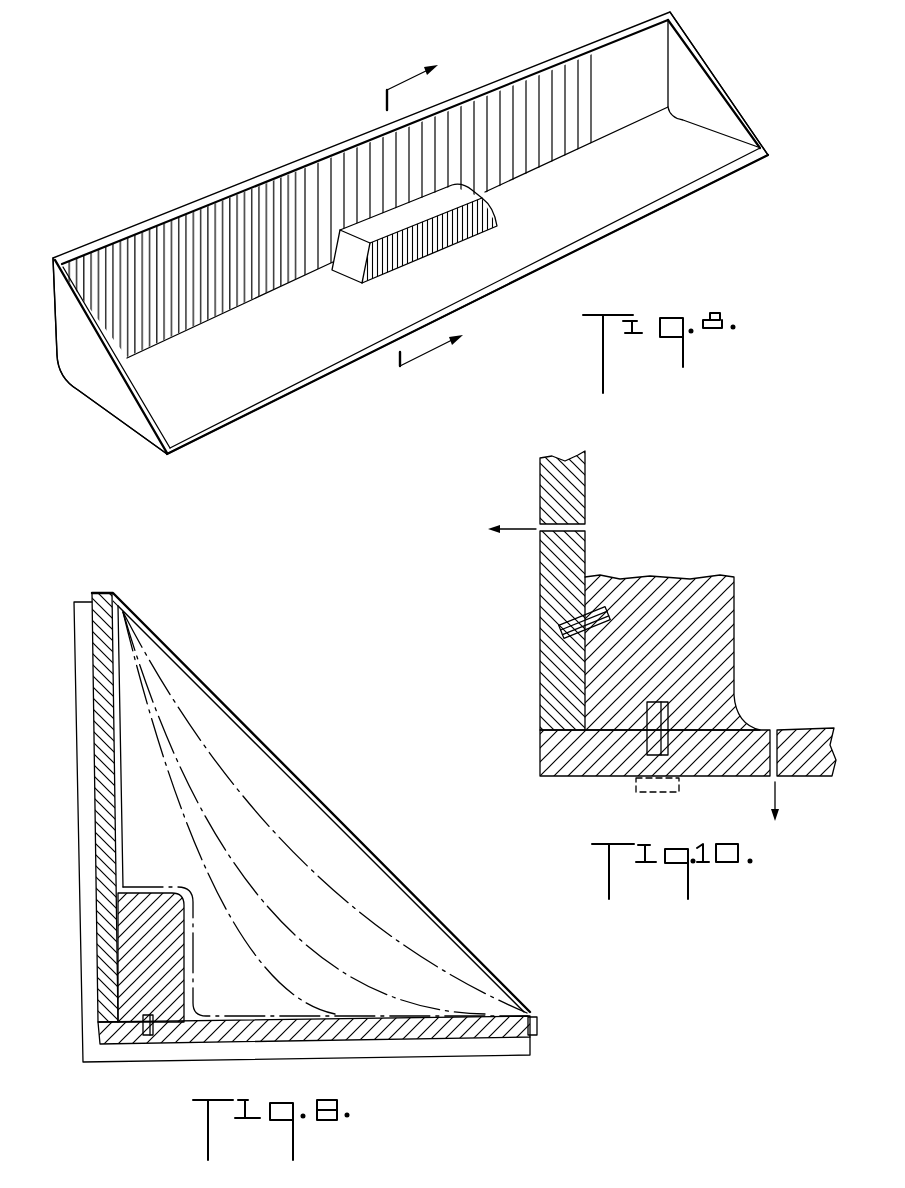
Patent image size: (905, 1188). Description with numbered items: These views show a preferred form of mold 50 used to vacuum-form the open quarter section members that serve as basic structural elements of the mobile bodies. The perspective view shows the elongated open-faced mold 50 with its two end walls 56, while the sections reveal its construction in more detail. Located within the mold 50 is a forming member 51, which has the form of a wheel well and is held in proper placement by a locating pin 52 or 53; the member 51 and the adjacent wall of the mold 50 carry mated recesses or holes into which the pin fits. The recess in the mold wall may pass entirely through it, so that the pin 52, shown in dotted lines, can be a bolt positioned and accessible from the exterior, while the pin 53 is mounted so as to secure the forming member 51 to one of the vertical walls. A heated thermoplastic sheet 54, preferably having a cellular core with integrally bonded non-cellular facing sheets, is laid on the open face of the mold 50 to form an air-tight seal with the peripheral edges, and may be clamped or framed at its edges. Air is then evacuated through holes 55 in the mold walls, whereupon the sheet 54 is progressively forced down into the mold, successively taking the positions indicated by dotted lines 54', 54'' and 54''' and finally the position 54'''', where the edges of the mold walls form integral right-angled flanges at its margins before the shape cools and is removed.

In FIG. 8, the mold 50 is at (666, 225).
In FIG. 9, the mold 50 is at (194, 1069).
In FIG. 8, the forming member 51 is at (447, 228).
In FIG. 9, the forming member 51 is at (140, 953).
In FIG. 10, the forming member 51 is at (720, 632).
In FIG. 9, the locating pin 52 is at (148, 1036).
In FIG. 10, the locating pin 52 is at (645, 742).
In FIG. 10, the locating pin 53 is at (560, 618).
In FIG. 9, the thermoplastic sheet 54 is at (311, 802).
In FIG. 9, the first intermediate sheet position 54' is at (325, 812).
In FIG. 9, the second intermediate sheet position 54'' is at (304, 813).
In FIG. 9, the third intermediate sheet position 54''' is at (229, 813).
In FIG. 9, the final sheet position 54'''' is at (325, 951).
In FIG. 10, the holes 55 is at (545, 516).
In FIG. 8, the end wall 56 is at (103, 378).